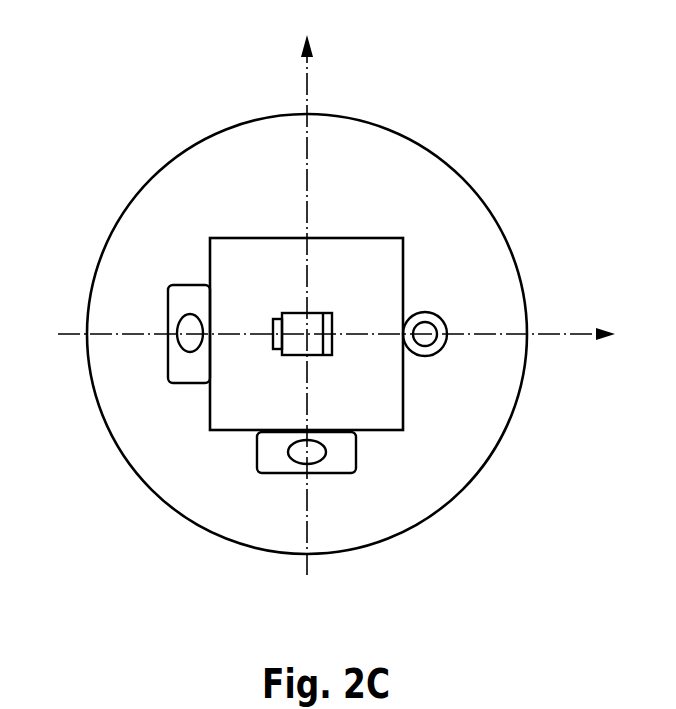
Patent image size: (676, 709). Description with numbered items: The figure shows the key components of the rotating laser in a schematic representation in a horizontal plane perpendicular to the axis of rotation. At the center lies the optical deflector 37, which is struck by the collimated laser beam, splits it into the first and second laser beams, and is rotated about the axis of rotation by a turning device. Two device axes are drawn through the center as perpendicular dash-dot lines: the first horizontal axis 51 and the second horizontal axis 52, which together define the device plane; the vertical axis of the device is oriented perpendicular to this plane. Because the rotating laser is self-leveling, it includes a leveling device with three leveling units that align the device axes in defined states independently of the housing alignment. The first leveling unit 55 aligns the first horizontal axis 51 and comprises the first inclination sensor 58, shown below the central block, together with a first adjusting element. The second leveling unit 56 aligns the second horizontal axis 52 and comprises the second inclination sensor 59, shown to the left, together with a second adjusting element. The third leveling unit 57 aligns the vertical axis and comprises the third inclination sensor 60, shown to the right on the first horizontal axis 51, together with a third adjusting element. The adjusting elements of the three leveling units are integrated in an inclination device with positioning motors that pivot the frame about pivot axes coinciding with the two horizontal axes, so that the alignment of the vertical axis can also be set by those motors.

The optical deflector 37 is at (298, 343).
The first horizontal axis 51 is at (570, 334).
The second horizontal axis 52 is at (307, 67).
The first leveling unit 55 is at (286, 504).
The second leveling unit 56 is at (133, 312).
The third leveling unit 57 is at (425, 298).
The first inclination sensor 58 is at (342, 460).
The second inclination sensor 59 is at (193, 367).
The third inclination sensor 60 is at (422, 340).